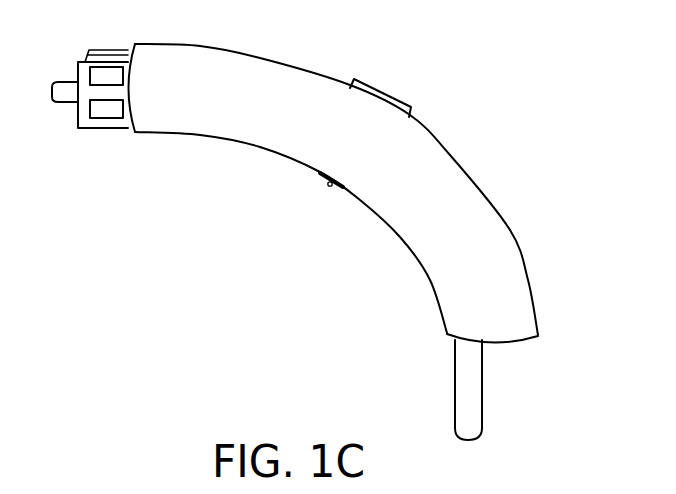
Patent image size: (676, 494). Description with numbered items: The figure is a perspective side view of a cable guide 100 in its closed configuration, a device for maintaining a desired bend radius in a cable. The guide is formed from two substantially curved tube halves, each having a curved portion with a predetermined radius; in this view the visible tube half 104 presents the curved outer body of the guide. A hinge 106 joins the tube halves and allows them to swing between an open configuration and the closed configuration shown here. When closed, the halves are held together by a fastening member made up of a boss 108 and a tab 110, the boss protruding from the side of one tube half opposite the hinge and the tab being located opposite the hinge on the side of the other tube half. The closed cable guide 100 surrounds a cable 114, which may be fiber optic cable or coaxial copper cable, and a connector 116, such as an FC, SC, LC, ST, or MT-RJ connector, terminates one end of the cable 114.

The cable guide 100 is at (295, 223).
The tube half 104 is at (276, 62).
The hinge 106 is at (373, 90).
The boss 108 is at (329, 188).
The tab 110 is at (318, 173).
The cable 114 is at (453, 380).
The connector 116 is at (83, 56).